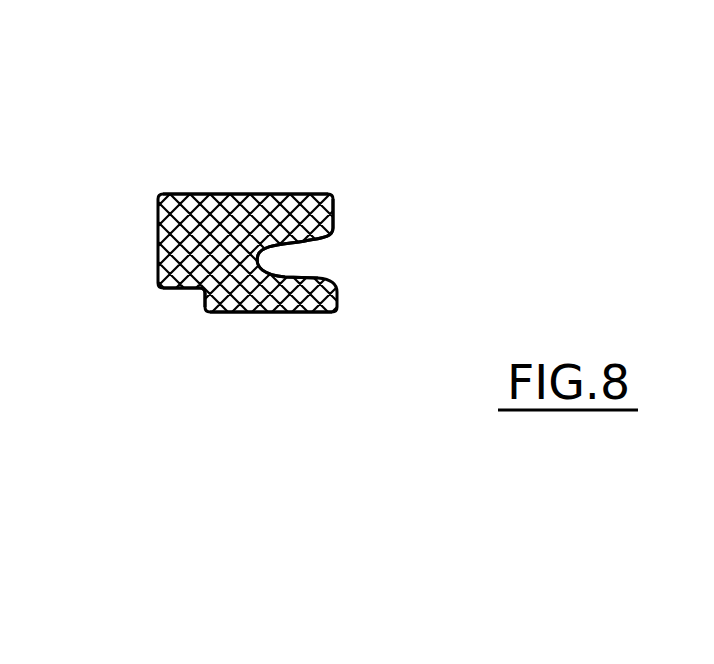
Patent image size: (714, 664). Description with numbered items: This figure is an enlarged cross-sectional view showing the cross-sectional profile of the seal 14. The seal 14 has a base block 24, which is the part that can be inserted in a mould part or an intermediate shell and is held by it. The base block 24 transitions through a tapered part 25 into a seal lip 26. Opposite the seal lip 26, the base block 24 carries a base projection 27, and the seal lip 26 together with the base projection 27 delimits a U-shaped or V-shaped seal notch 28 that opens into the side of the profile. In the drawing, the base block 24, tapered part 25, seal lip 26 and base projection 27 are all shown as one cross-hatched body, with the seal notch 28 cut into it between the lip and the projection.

The seal 14 is at (284, 191).
The base block 24 is at (188, 193).
The base projection 27 is at (337, 213).
The seal notch 28 is at (277, 259).
The tapered part 25 is at (198, 292).
The seal lip 26 is at (295, 312).